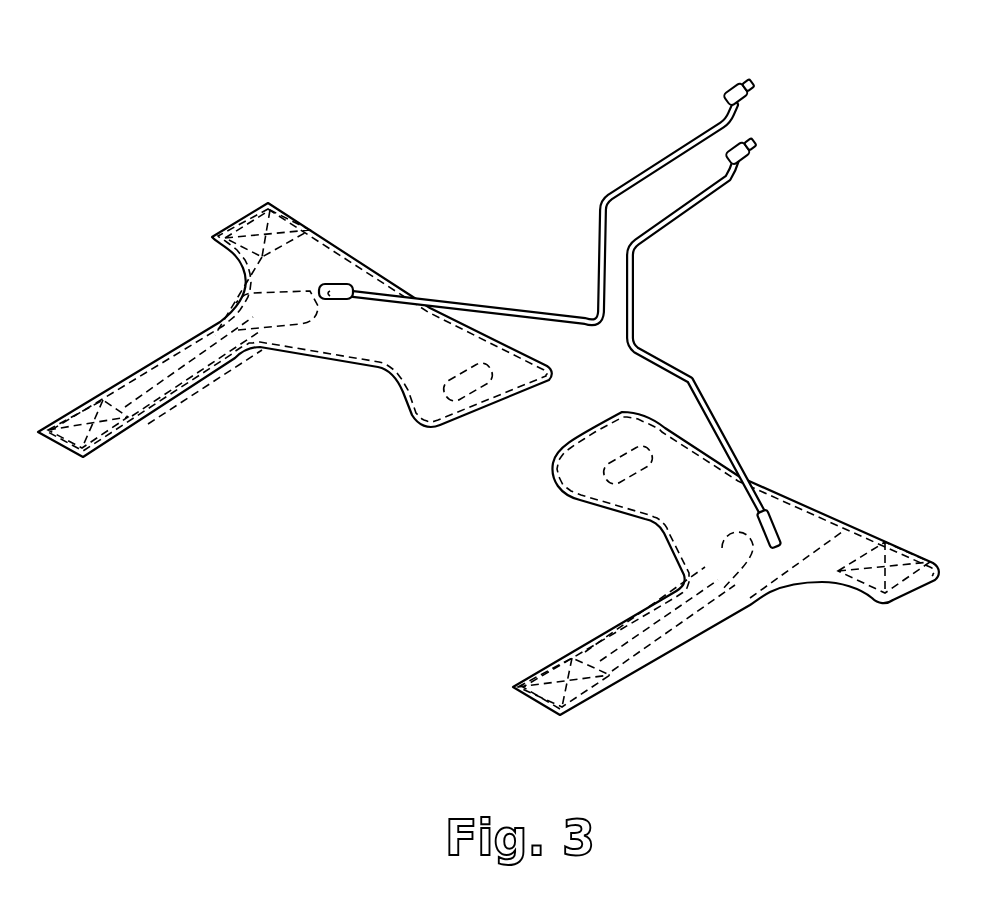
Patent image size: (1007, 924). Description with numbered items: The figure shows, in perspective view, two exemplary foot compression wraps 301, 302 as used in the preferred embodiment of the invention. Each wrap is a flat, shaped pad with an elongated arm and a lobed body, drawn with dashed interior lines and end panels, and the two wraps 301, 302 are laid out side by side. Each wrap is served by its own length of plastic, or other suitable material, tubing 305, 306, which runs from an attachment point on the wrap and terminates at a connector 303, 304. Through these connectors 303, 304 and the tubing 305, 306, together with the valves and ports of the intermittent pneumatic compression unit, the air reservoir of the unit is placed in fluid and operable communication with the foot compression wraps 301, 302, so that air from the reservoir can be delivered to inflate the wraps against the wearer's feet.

The foot compression wrap 301 is at (237, 382).
The foot compression wrap 302 is at (740, 636).
The connector 303 is at (743, 80).
The connector 304 is at (760, 137).
The tubing 305 is at (650, 168).
The tubing 306 is at (680, 217).